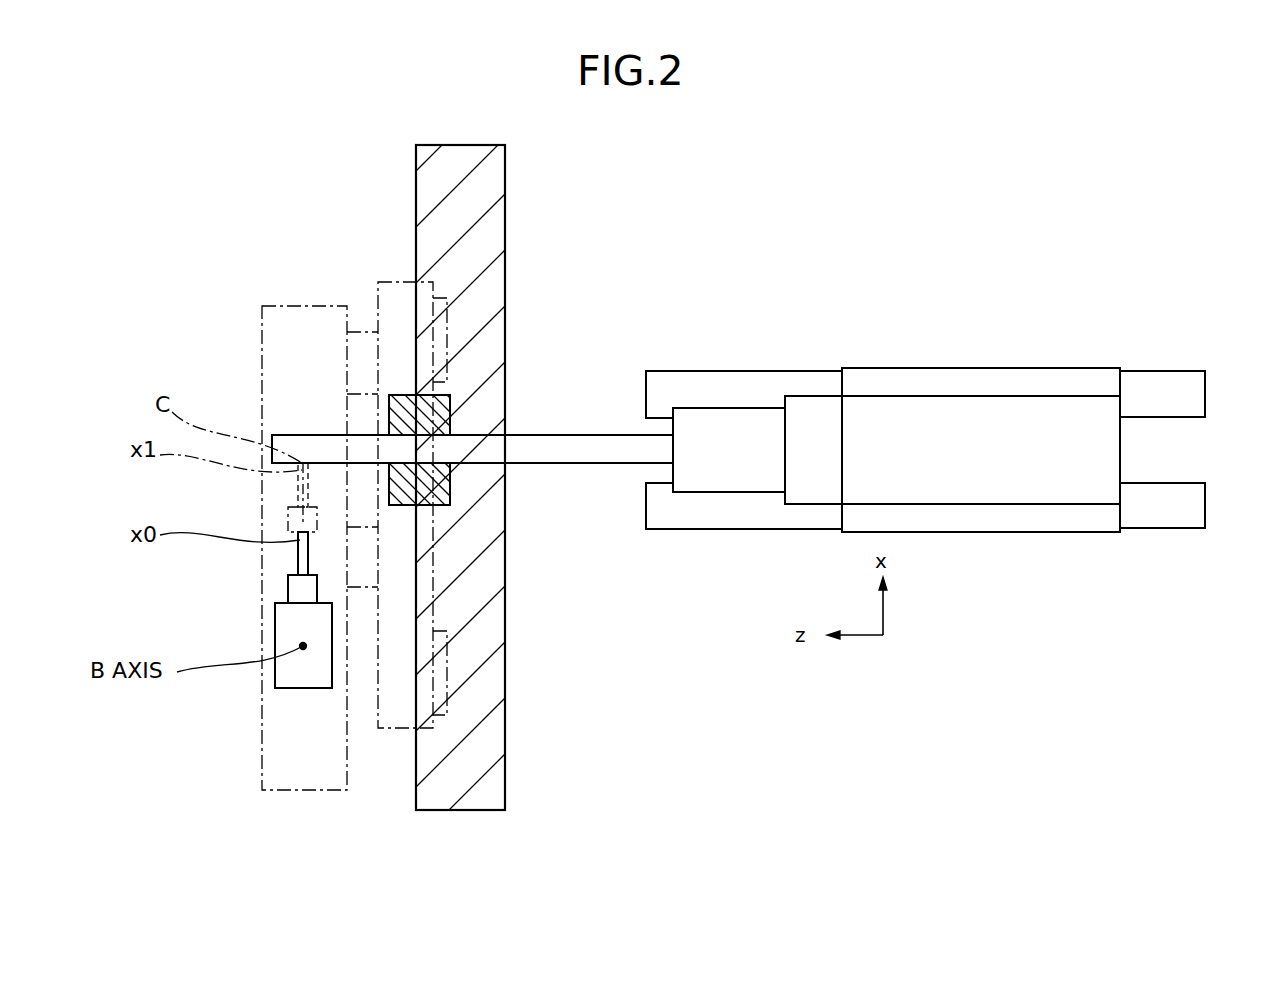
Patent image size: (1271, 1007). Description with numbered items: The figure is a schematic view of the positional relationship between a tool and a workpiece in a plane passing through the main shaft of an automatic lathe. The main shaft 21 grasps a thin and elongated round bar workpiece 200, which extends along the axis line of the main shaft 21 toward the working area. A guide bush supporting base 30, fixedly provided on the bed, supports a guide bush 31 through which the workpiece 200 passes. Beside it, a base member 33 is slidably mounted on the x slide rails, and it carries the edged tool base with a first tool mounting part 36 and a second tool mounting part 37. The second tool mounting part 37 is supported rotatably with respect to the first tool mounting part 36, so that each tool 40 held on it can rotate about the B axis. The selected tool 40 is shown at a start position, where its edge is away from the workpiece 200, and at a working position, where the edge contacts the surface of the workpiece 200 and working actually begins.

The main shaft 21 is at (753, 420).
The workpiece 200 is at (588, 445).
The guide bush supporting base 30 is at (492, 220).
The guide bush 31 is at (425, 487).
The base member 33 is at (388, 718).
The first tool mounting part 36 is at (318, 316).
The second tool mounting part 37 is at (310, 688).
The tool 40 is at (300, 487).